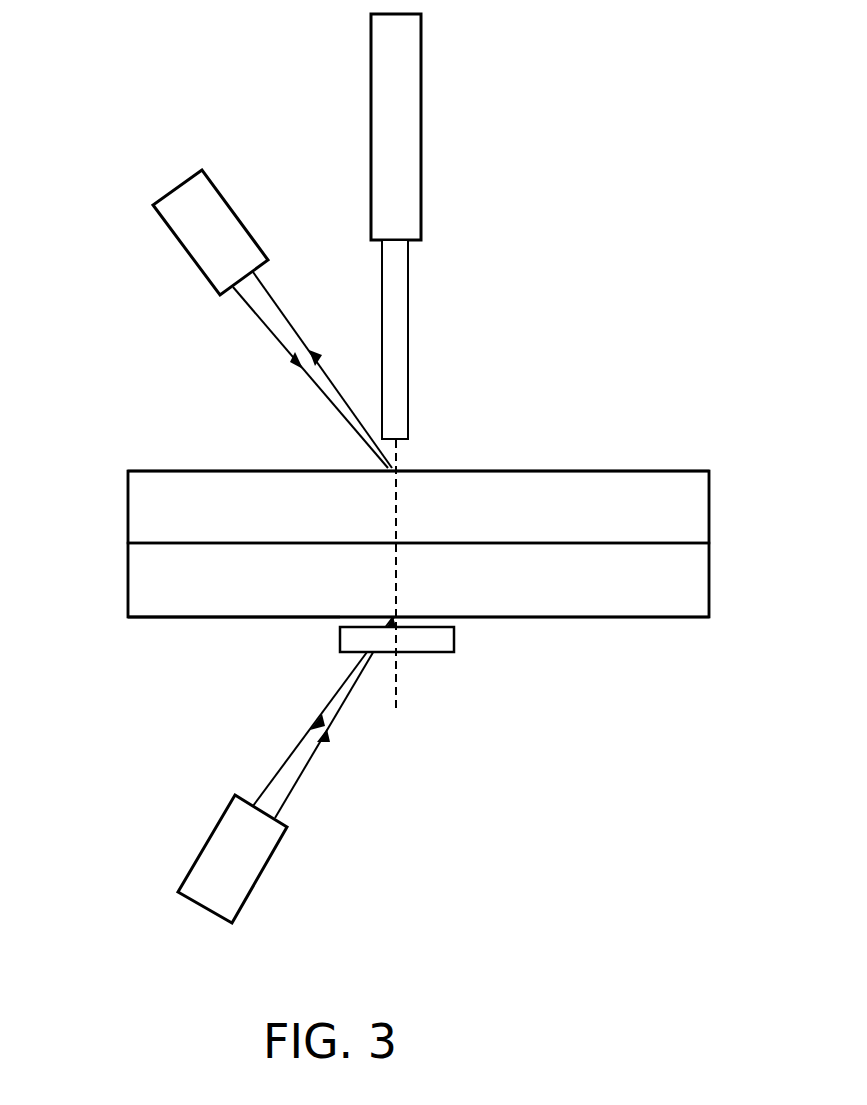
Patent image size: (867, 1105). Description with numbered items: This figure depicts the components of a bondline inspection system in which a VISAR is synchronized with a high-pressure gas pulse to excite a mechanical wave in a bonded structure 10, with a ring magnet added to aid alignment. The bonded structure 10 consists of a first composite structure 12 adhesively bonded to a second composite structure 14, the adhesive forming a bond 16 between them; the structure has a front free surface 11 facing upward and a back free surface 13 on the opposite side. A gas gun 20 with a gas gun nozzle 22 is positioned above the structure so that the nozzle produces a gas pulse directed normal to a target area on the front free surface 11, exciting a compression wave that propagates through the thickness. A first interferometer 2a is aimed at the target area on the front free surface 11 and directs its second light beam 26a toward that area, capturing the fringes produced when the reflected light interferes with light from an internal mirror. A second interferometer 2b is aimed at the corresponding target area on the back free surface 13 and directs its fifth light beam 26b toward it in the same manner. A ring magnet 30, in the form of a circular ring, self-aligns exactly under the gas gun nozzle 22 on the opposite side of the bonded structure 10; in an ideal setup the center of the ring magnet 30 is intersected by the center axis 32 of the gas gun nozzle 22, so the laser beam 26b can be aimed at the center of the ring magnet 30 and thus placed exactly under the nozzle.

The first interferometer 2a is at (195, 265).
The second interferometer 2b is at (267, 867).
The bonded structure 10 is at (127, 530).
The front free surface 11 is at (288, 460).
The first composite structure 12 is at (226, 458).
The back free surface 13 is at (292, 617).
The second composite structure 14 is at (195, 618).
The bond 16 is at (578, 543).
The gas gun 20 is at (421, 160).
The gas gun nozzle 22 is at (408, 422).
The second light beam 26a is at (260, 320).
The fifth light beam 26b is at (293, 792).
The ring magnet 30 is at (454, 640).
The center axis 32 is at (396, 500).